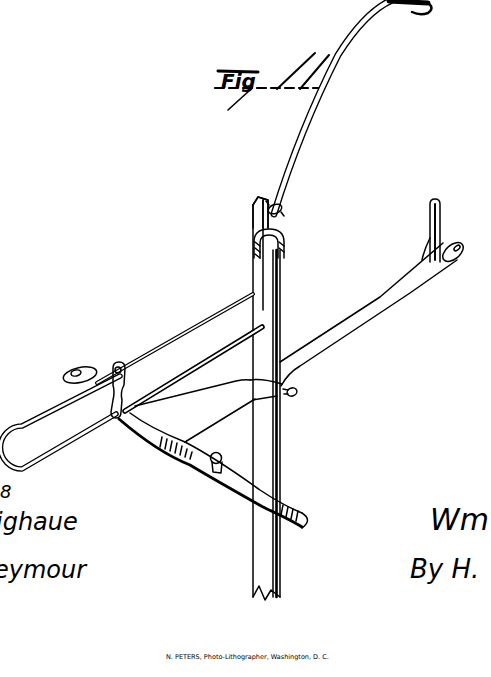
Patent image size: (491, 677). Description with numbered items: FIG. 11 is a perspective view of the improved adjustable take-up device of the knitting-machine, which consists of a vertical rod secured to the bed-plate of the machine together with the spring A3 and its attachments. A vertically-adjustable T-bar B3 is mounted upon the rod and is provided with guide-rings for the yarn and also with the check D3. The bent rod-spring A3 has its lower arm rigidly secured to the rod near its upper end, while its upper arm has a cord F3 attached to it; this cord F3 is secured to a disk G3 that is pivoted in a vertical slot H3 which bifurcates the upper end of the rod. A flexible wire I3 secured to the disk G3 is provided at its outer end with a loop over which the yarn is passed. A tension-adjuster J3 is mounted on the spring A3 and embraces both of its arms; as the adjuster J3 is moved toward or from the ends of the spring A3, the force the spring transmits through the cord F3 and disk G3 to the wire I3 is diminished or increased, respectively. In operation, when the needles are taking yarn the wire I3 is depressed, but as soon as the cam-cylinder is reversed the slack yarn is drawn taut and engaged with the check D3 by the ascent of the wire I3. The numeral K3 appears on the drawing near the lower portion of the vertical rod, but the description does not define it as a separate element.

The bent rod-spring A3 is at (148, 336).
The vertically-adjustable T-bar B3 is at (230, 424).
The check D3 is at (446, 230).
The cord F3 is at (254, 247).
The disk G3 is at (254, 222).
The vertical slot H3 is at (283, 211).
The flexible wire I3 is at (353, 107).
The tension-adjuster J3 is at (116, 420).
The post K3 is at (278, 398).